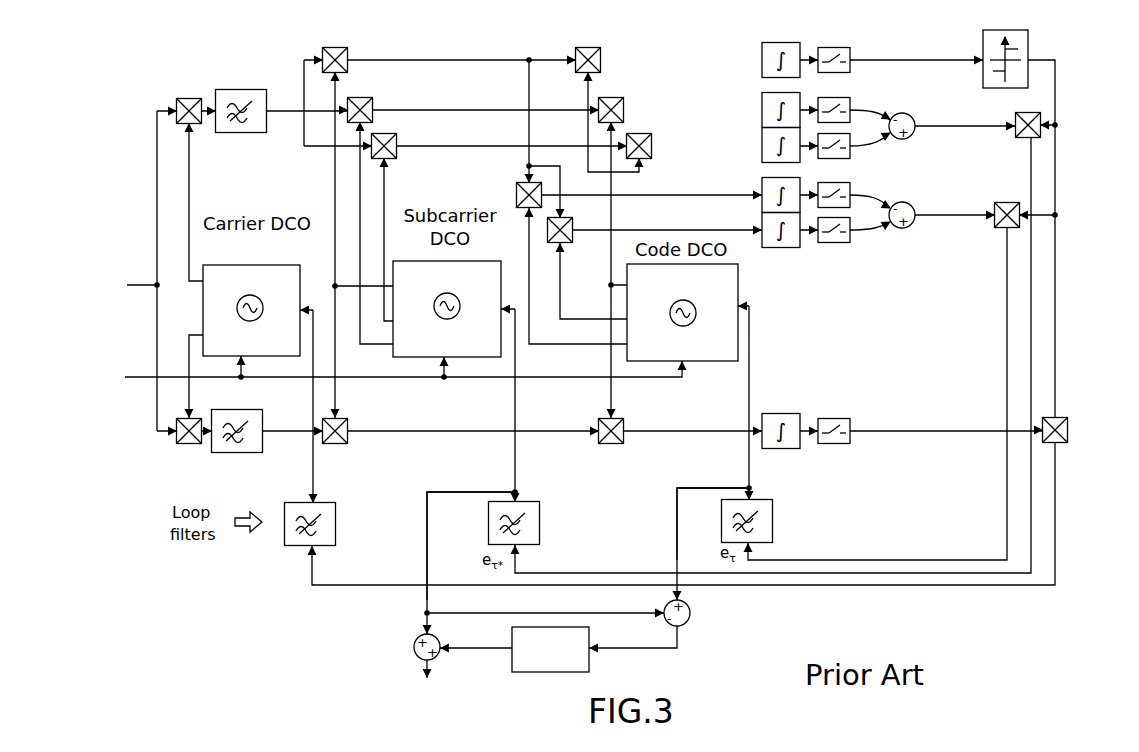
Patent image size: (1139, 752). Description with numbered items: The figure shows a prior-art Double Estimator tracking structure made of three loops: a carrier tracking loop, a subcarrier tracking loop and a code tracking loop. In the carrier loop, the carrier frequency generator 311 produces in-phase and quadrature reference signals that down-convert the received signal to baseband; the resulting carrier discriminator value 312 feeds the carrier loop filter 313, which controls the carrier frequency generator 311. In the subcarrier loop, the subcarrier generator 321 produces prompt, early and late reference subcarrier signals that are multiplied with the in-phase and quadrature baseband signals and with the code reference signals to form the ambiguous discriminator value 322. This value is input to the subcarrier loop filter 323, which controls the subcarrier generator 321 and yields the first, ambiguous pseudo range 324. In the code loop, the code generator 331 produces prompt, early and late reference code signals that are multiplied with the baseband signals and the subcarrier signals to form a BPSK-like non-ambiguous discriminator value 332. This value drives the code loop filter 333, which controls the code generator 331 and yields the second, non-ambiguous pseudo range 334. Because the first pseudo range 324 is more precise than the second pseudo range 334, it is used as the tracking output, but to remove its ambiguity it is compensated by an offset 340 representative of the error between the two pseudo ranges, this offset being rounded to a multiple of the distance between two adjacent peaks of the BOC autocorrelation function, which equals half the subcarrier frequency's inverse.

The carrier frequency generator 311 is at (203, 310).
The carrier discriminator value 312 is at (1056, 388).
The carrier loop filter 313 is at (283, 545).
The subcarrier generator 321 is at (420, 357).
The ambiguous discriminator value 322 is at (1031, 180).
The subcarrier loop filter 323 is at (540, 510).
The first ambiguous pseudo range 324 is at (427, 522).
The code generator 331 is at (738, 278).
The non-ambiguous discriminator value 332 is at (1007, 322).
The code loop filter 333 is at (773, 520).
The second non-ambiguous pseudo range 334 is at (677, 537).
The offset 340 is at (488, 650).